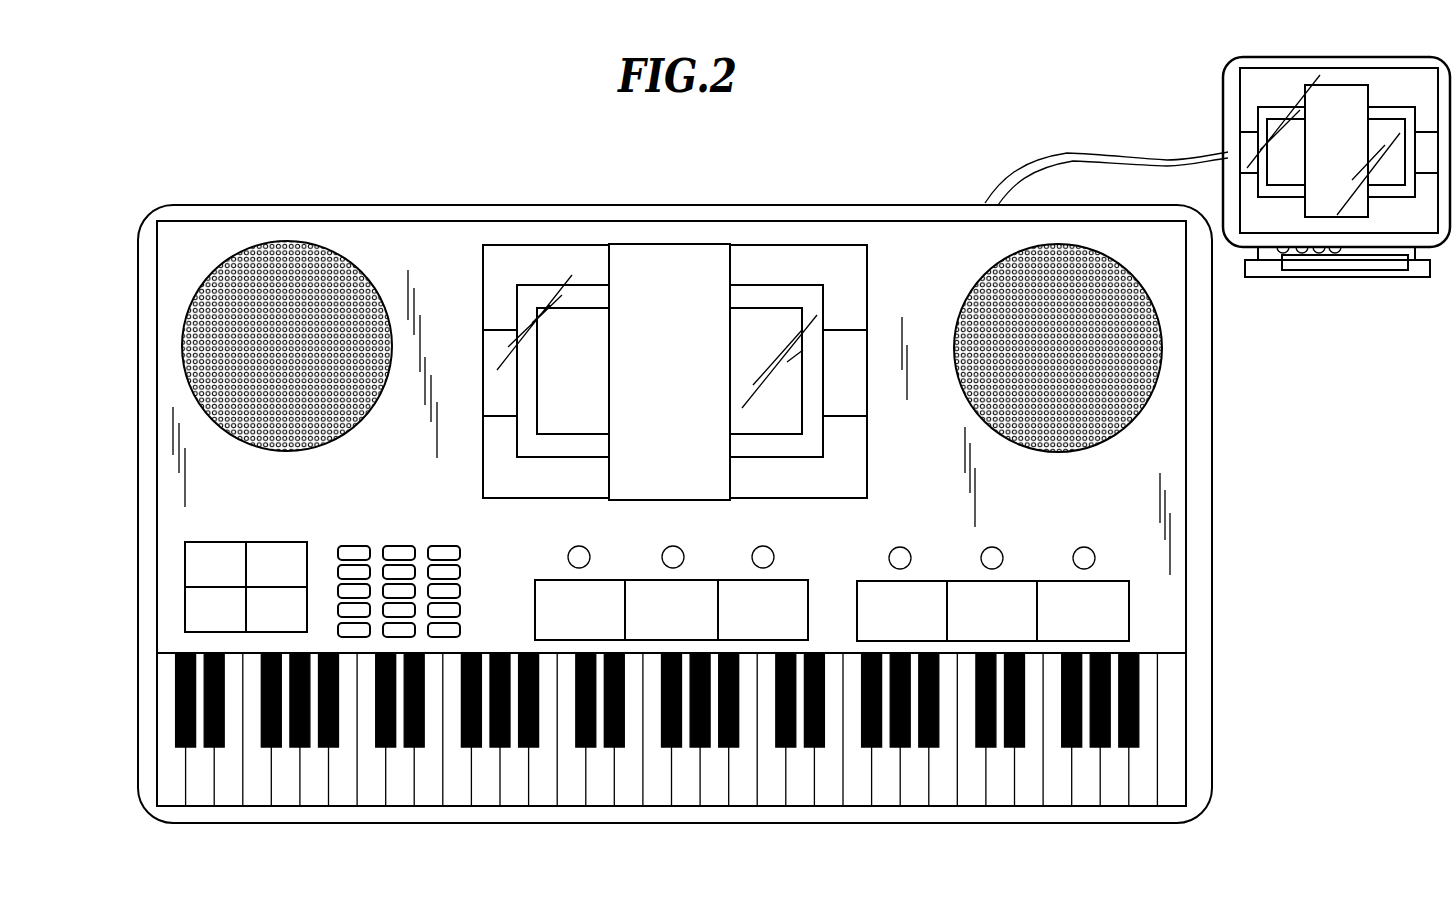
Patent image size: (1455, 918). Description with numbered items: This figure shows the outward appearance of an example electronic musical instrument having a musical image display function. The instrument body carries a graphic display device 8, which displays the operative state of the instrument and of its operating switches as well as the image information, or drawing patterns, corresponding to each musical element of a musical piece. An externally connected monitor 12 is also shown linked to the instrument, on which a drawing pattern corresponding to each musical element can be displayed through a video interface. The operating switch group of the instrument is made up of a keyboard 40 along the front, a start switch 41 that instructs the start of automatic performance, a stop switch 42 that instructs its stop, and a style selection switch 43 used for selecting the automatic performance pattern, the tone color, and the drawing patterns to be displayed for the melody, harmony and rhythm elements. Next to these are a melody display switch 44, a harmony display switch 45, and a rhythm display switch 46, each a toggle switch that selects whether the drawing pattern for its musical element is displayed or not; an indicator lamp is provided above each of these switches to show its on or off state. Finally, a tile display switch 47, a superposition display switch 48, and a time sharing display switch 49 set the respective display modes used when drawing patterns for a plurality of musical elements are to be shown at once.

The graphic display device 8 is at (660, 244).
The externally connected monitor 12 is at (1222, 103).
The keyboard 40 is at (1178, 749).
The start switch 41 is at (225, 542).
The stop switch 42 is at (290, 542).
The style selection switch 43 is at (460, 540).
The melody display switch 44 is at (553, 580).
The harmony display switch 45 is at (645, 580).
The rhythm display switch 46 is at (790, 580).
The tile display switch 47 is at (880, 581).
The superposition display switch 48 is at (970, 581).
The time sharing display switch 49 is at (1103, 581).